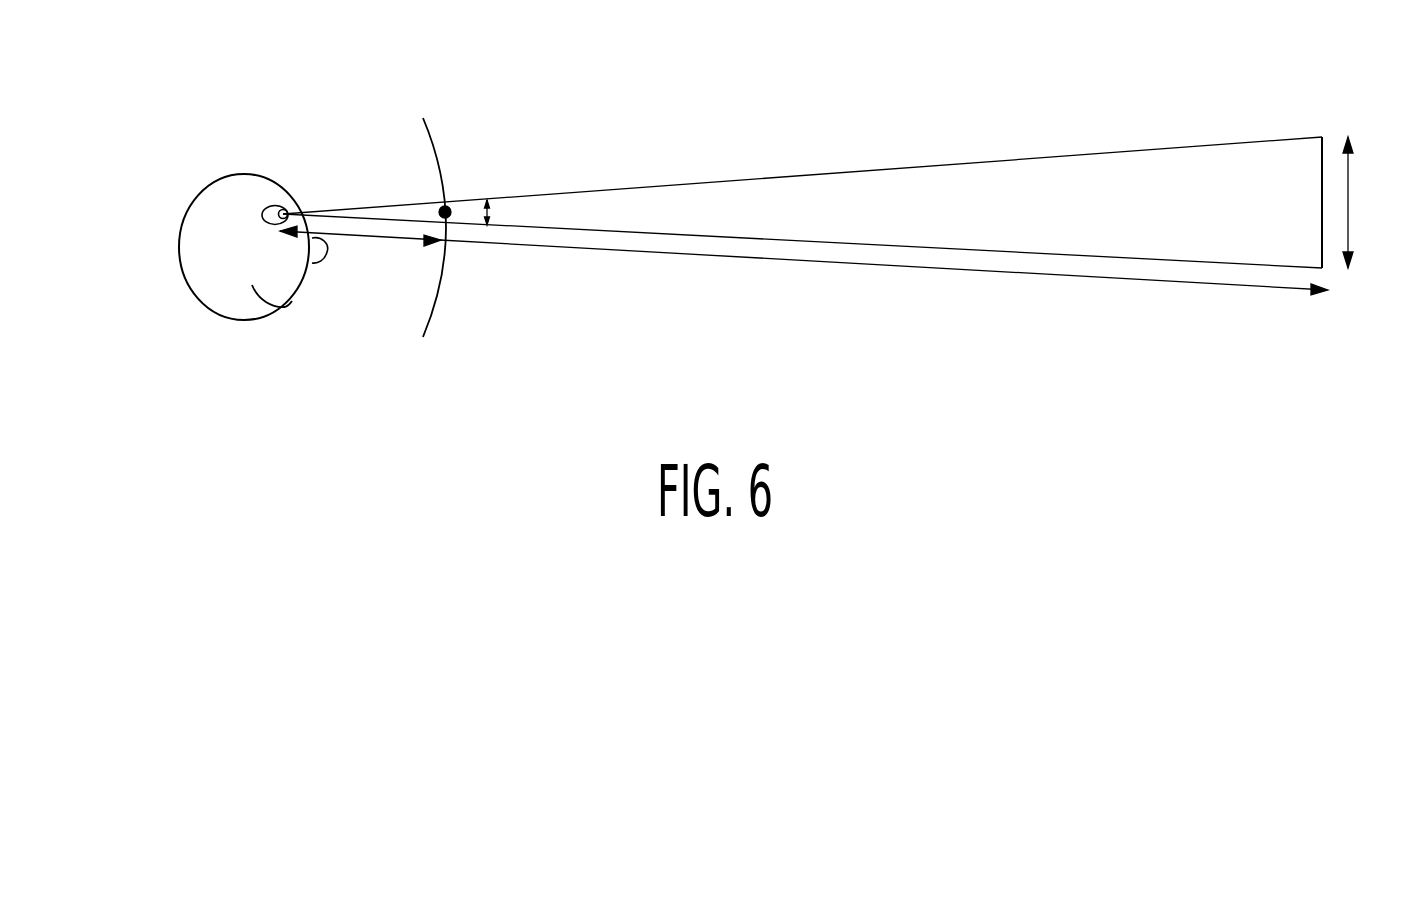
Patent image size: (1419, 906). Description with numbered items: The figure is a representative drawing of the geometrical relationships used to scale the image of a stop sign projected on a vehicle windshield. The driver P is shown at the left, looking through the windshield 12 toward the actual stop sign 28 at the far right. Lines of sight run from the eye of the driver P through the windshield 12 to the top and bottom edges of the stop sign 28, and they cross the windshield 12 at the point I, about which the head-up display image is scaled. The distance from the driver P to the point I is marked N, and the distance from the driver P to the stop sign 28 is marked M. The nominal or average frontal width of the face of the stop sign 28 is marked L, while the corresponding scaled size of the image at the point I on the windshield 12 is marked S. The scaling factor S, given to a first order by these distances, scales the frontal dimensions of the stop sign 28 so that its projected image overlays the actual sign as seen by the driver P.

The windshield 12 is at (428, 128).
The stop sign 28 is at (1322, 137).
The driver P is at (180, 237).
The point on the windshield I is at (449, 207).
The scaling factor S is at (493, 212).
The distance from the driver to the point I N is at (360, 250).
The distance from the driver to the stop sign M is at (884, 274).
The nominal width of the stop sign face L is at (1358, 202).